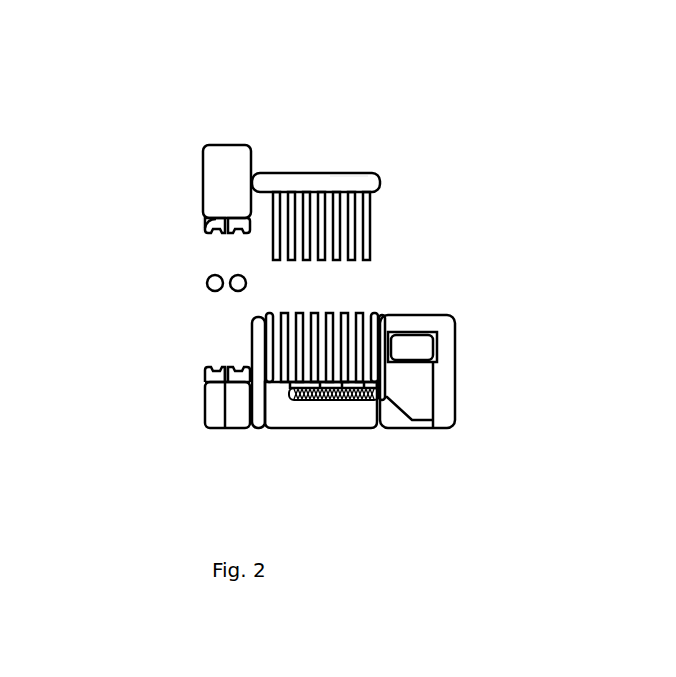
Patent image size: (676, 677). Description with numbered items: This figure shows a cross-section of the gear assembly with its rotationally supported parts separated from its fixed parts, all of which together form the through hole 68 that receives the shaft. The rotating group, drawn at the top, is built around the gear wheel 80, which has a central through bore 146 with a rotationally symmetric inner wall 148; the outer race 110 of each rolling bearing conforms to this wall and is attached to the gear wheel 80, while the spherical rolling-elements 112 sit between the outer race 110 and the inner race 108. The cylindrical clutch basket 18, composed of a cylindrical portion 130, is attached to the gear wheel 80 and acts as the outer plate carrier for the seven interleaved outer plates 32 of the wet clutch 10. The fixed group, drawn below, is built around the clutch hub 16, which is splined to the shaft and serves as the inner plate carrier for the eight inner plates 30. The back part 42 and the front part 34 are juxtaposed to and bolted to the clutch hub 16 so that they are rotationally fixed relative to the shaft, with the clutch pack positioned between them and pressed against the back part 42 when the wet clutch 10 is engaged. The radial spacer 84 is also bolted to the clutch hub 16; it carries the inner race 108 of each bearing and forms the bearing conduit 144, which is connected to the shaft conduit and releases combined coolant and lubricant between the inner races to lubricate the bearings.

The wet clutch 10 is at (392, 122).
The gear wheel 80 is at (236, 163).
The clutch basket 18 is at (305, 183).
The cylindrical portion 130 is at (362, 187).
The outer plates 32 is at (375, 235).
The central through bore 146 is at (214, 222).
The rotationally symmetric inner wall 148 is at (206, 225).
The outer race 110 is at (203, 235).
The rolling-elements 112 is at (205, 283).
The inner plates 30 is at (365, 302).
The back part 42 is at (258, 415).
The clutch hub 16 is at (315, 415).
The through hole 68 is at (330, 428).
The front part 34 is at (423, 415).
The bearing conduit 144 is at (213, 413).
The radial spacer 84 is at (213, 392).
The inner race 108 is at (205, 365).